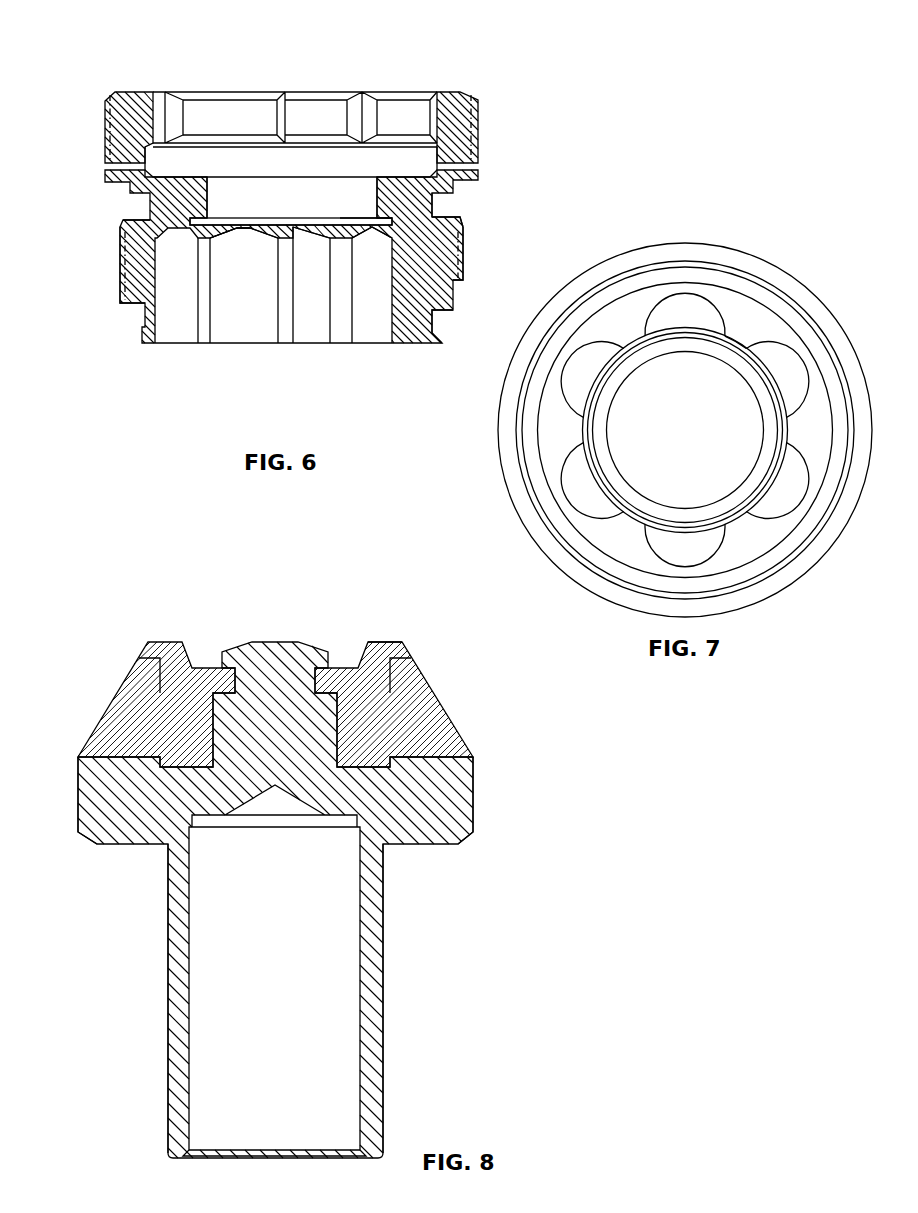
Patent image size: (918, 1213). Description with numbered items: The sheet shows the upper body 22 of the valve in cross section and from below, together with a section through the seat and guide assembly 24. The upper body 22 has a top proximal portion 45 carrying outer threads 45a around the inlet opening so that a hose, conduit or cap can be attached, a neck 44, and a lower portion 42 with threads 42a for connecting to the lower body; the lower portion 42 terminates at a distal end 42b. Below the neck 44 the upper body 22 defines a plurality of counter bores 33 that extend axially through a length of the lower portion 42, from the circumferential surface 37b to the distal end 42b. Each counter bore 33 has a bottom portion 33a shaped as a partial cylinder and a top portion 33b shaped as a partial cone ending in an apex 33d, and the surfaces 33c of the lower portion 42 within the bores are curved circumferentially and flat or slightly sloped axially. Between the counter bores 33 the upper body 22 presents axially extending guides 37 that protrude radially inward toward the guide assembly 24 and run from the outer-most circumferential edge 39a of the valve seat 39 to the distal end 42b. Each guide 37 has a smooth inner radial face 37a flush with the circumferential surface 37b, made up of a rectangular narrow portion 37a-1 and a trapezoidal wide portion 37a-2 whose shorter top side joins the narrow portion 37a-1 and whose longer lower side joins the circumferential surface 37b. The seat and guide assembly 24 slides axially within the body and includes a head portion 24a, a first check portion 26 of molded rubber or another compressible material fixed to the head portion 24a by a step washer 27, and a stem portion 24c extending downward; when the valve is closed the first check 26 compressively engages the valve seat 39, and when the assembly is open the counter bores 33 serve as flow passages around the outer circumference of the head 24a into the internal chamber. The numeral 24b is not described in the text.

In FIG. 6, the upper body 22 is at (494, 86).
In FIG. 7, the upper body 22 is at (793, 240).
In FIG. 8, the seat and guide assembly 24 is at (496, 876).
In FIG. 8, the head portion 24a is at (130, 825).
In FIG. 8, the bolt head right side 24b is at (430, 845).
In FIG. 8, the stem portion 24c is at (168, 1030).
In FIG. 8, the first check portion 26 is at (112, 706).
In FIG. 8, the step washer 27 is at (386, 641).
In FIG. 6, the counter bores 33 is at (256, 320).
In FIG. 7, the counter bores 33 is at (580, 495).
In FIG. 6, the bottom portion 33a is at (285, 330).
In FIG. 6, the top portion 33b is at (238, 230).
In FIG. 7, the surfaces 33c is at (685, 292).
In FIG. 6, the apex 33d is at (246, 226).
In FIG. 6, the axially extending guides 37 is at (207, 332).
In FIG. 7, the axially extending guides 37 is at (545, 435).
In FIG. 6, the inner radial face 37a is at (215, 285).
In FIG. 7, the inner radial face 37a is at (735, 345).
In FIG. 6, the narrow portion 37a-1 is at (342, 333).
In FIG. 6, the wide portion 37a-2 is at (347, 232).
In FIG. 6, the circumferential surface 37b is at (338, 222).
In FIG. 7, the circumferential surface 37b is at (773, 372).
In FIG. 6, the valve seat 39 is at (208, 217).
In FIG. 7, the valve seat 39 is at (640, 507).
In FIG. 6, the outer-most circumferential edge 39a is at (363, 216).
In FIG. 7, the outer-most circumferential edge 39a is at (600, 515).
In FIG. 6, the lower portion 42 is at (140, 290).
In FIG. 6, the threads 42a is at (120, 250).
In FIG. 6, the distal end 42b is at (412, 345).
In FIG. 6, the neck 44 is at (398, 203).
In FIG. 6, the top proximal portion 45 is at (470, 92).
In FIG. 6, the outer threads 45a is at (105, 140).